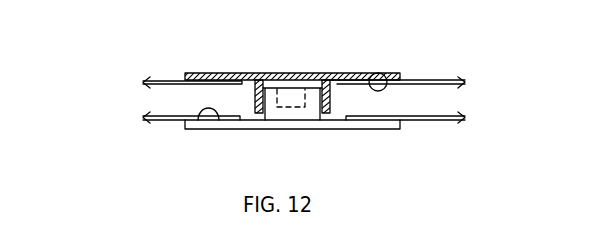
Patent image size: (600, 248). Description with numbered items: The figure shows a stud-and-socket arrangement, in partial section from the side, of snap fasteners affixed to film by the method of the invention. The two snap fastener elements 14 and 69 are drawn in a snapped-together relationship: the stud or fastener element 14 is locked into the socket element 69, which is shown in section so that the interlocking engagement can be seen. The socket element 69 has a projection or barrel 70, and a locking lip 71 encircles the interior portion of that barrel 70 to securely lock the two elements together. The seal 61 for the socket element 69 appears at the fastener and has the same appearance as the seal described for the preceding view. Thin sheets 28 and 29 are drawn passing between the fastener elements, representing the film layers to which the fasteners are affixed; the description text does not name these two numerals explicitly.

The stud fastener element 14 is at (292, 146).
The upper sheet 28 is at (440, 80).
The lower sheet 29 is at (445, 124).
The seal 61 is at (380, 73).
The socket element 69 is at (258, 73).
The barrel 70 is at (255, 96).
The locking lip 71 is at (331, 114).